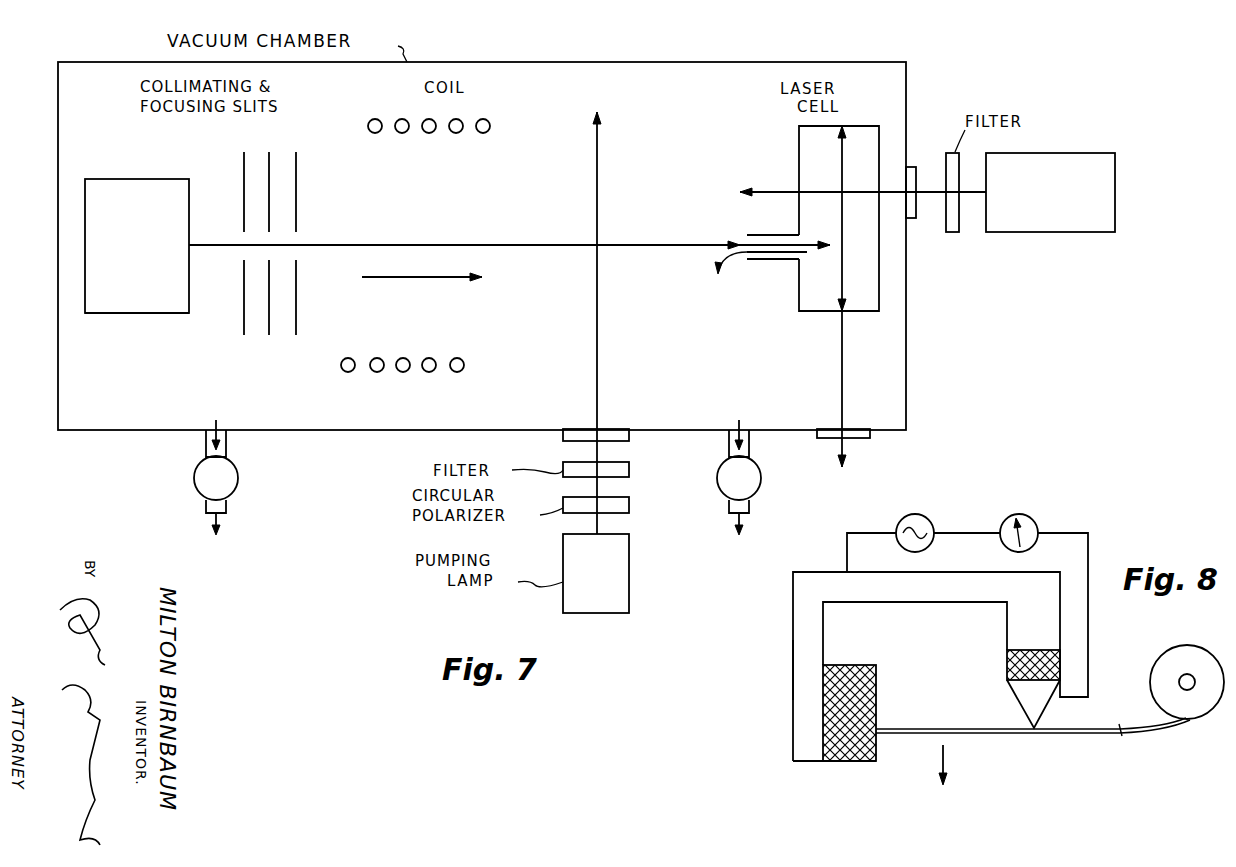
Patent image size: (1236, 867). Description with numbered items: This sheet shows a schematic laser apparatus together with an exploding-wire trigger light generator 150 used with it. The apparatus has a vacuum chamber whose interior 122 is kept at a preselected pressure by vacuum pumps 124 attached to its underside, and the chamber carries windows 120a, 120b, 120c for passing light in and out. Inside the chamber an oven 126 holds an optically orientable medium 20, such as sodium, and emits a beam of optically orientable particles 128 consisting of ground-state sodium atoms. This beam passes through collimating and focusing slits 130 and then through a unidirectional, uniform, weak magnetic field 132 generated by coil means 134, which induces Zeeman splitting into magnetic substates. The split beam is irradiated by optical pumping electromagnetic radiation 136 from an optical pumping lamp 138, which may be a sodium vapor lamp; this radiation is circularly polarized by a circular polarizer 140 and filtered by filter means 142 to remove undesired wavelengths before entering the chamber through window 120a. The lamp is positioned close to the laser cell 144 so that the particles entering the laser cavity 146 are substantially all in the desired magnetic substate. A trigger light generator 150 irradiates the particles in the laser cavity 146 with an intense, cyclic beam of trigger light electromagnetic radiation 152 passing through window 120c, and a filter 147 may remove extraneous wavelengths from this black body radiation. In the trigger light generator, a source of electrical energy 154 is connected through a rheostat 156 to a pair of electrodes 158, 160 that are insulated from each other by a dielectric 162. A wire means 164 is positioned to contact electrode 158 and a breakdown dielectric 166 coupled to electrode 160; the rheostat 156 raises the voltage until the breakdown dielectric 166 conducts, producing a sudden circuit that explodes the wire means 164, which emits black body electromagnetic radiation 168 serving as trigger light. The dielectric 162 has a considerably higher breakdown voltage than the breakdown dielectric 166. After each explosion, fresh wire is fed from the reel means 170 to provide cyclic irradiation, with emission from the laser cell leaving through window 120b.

In FIG. 7, the optically orientable medium 20 is at (148, 254).
In FIG. 7, the vacuum chamber window 120a is at (630, 436).
In FIG. 7, the vacuum chamber window 120b is at (870, 436).
In FIG. 7, the vacuum chamber window 120c is at (913, 166).
In FIG. 7, the interior 122 is at (548, 377).
In FIG. 7, the vacuum pumps 124 is at (235, 465).
In FIG. 7, the oven 126 is at (122, 313).
In FIG. 7, the beam of optically orientable particles 128 is at (208, 244).
In FIG. 7, the collimating and focusing slits 130 is at (296, 152).
In FIG. 7, the unidirectional, uniform, weak magnetic field 132 is at (438, 279).
In FIG. 7, the coil means 134 is at (433, 114).
In FIG. 7, the optical pumping electromagnetic radiation 136 is at (600, 141).
In FIG. 7, the optical pumping lamp 138 is at (630, 578).
In FIG. 7, the circular polarizer 140 is at (630, 506).
In FIG. 7, the filter means 142 is at (630, 470).
In FIG. 7, the laser cell 144 is at (822, 311).
In FIG. 7, the laser cavity 146 is at (811, 142).
In FIG. 7, the filter 147 is at (953, 233).
In FIG. 7, the trigger light generator 150 is at (1082, 153).
In FIG. 8, the trigger light generator 150 is at (833, 568).
In FIG. 7, the trigger light electromagnetic radiation 152 is at (765, 190).
In FIG. 8, the source of electrical energy 154 is at (929, 524).
In FIG. 8, the rheostat 156 is at (1037, 524).
In FIG. 8, the electrode 158 is at (1013, 704).
In FIG. 8, the electrode 160 is at (793, 647).
In FIG. 8, the dielectric 162 is at (1005, 658).
In FIG. 8, the wire means 164 is at (1005, 734).
In FIG. 8, the breakdown dielectric 166 is at (843, 762).
In FIG. 8, the black body electromagnetic radiation 168 is at (946, 760).
In FIG. 8, the reel means 170 is at (1190, 652).